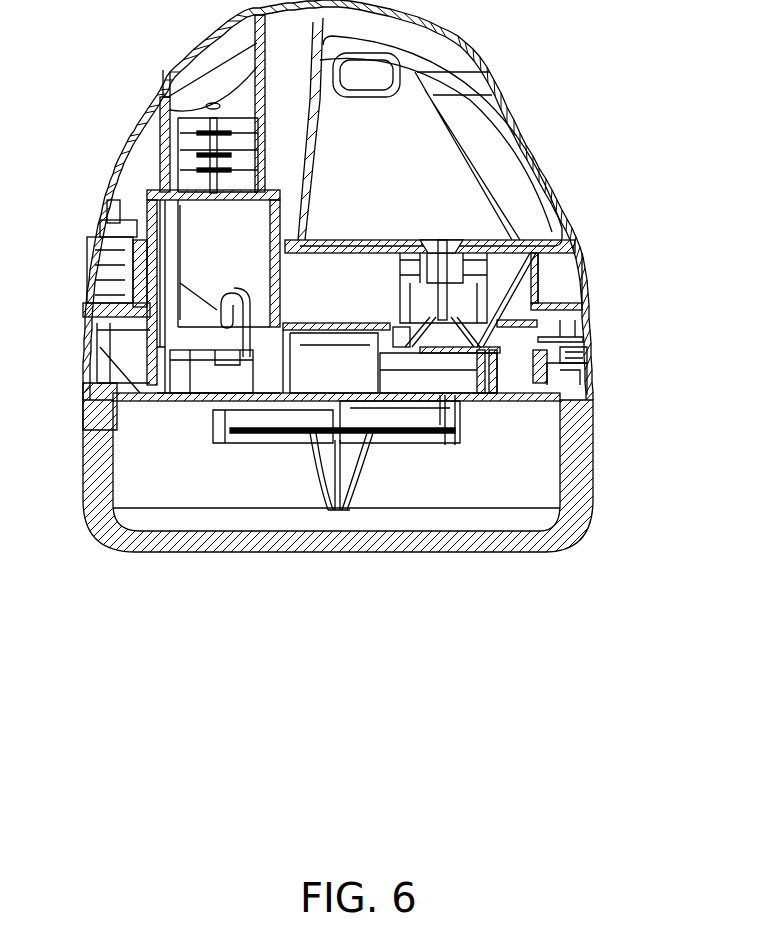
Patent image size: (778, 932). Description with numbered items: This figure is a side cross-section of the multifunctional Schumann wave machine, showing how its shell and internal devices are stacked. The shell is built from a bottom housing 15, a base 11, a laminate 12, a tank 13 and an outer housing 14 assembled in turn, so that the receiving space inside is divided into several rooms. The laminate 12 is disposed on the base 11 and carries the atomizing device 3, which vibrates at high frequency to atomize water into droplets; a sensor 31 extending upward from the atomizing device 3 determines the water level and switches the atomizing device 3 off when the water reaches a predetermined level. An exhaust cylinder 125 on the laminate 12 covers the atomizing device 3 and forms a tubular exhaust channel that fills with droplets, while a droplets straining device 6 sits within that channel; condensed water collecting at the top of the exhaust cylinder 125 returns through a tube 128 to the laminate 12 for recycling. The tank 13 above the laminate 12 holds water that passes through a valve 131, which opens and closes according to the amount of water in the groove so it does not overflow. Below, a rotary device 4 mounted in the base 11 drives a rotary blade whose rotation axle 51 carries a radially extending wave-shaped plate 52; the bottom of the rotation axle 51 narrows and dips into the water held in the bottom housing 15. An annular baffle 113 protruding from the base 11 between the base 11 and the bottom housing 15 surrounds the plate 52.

The outer housing 14 is at (476, 58).
The tank 13 is at (520, 133).
The valve 131 is at (452, 240).
The laminate 12 is at (540, 278).
The base 11 is at (520, 397).
The annular baffle 113 is at (455, 431).
The bottom housing 15 is at (567, 495).
The droplets straining device 6 is at (210, 153).
The tube 128 is at (172, 172).
The exhaust cylinder 125 is at (153, 197).
The sensor 31 is at (220, 322).
The atomizing device 3 is at (193, 377).
The rotary device 4 is at (322, 372).
The rotation axle 51 is at (350, 487).
The plate 52 is at (423, 432).